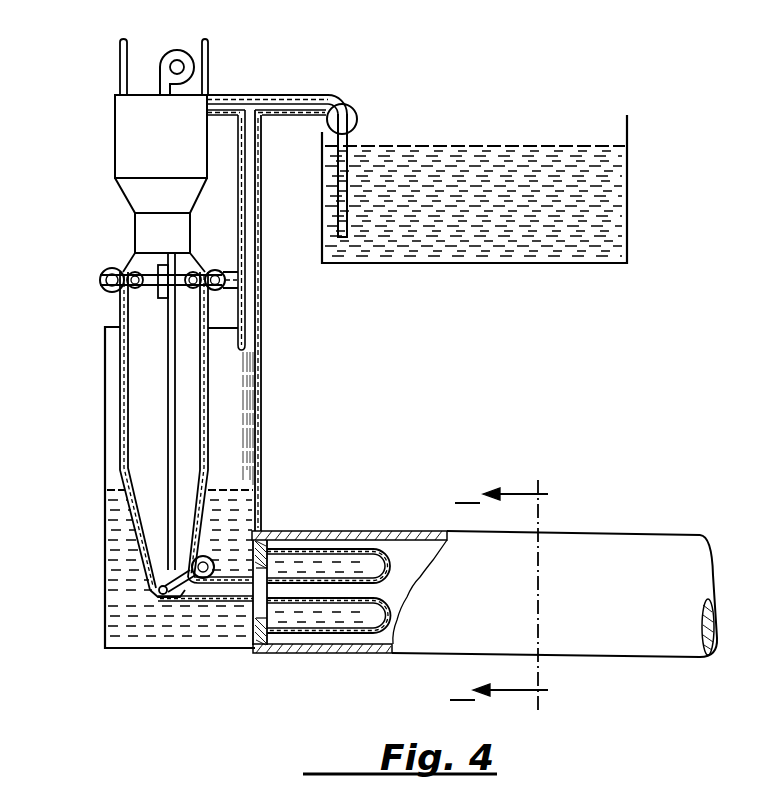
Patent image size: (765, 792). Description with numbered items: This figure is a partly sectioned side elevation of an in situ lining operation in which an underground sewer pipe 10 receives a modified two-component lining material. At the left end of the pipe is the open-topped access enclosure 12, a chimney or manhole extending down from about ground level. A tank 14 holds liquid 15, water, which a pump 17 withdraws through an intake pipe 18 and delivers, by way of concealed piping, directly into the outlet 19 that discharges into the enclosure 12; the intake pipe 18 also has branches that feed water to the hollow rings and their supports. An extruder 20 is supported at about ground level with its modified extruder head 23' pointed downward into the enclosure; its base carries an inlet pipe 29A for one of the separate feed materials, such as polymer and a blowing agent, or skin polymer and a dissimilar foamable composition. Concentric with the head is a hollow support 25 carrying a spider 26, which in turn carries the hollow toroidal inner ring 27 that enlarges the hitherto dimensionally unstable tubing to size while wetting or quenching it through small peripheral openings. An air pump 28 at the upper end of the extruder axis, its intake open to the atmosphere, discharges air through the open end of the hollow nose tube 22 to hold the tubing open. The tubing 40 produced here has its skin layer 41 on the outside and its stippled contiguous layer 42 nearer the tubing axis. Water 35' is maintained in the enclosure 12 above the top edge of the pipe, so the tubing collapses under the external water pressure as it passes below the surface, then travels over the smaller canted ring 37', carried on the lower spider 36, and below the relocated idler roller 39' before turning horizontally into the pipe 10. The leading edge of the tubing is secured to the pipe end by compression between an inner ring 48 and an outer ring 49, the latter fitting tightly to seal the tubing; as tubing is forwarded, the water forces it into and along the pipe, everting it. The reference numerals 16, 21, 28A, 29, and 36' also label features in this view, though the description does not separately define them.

The sewer pipe 10 is at (618, 530).
The access enclosure 12 is at (105, 450).
The tank 14 is at (620, 183).
The liquid 15 is at (465, 180).
The lower end of tube 16 is at (343, 222).
The pump 17 is at (343, 112).
The intake pipe 18 is at (248, 103).
The outlet 19 is at (250, 230).
The extruder 20 is at (113, 150).
The housing 21 is at (133, 127).
The hollow nose tube 22 is at (163, 298).
The modified extruder head 23' is at (131, 242).
The hollow support 25 is at (150, 262).
The spider 26 is at (148, 288).
The inner ring 27 is at (192, 290).
The air pump 28 is at (162, 50).
The left post 28A is at (120, 62).
The ring 29 is at (100, 278).
The inlet pipe 29A is at (208, 58).
The water 35' is at (146, 563).
The spider 36 is at (212, 427).
The lower conduit 36' is at (205, 645).
The canted ring 37' is at (120, 610).
The idler roller 39' is at (238, 533).
The tubing 40 is at (120, 361).
The skin layer 41 is at (127, 384).
The contiguous layer 42 is at (127, 424).
The inner ring 48 is at (290, 553).
The outer ring 49 is at (260, 652).